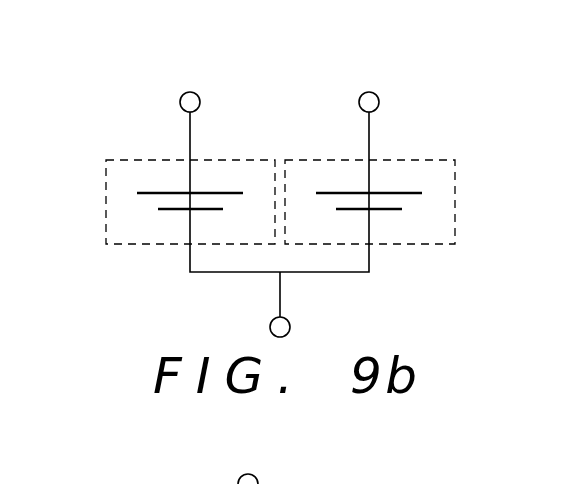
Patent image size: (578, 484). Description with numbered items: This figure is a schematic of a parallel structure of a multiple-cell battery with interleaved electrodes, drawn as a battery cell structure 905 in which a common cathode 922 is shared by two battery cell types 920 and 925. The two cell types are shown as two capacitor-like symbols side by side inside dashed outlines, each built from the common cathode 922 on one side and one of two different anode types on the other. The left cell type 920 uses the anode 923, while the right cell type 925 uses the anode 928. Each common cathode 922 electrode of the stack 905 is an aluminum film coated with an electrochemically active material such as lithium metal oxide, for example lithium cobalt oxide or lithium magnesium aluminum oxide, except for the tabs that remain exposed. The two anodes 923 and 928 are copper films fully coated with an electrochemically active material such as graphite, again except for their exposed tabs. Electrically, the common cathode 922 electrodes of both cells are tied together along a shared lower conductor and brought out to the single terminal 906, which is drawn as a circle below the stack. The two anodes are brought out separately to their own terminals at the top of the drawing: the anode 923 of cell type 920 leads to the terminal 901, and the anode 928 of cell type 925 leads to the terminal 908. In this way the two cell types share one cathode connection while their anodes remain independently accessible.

The battery cell structure 905 is at (424, 48).
The battery cell type 920 is at (120, 160).
The battery cell type 925 is at (439, 162).
The first terminal 901 is at (180, 103).
The terminal 908 is at (379, 103).
The terminal 906 is at (270, 327).
The anode 923 is at (142, 193).
The anode 928 is at (417, 193).
The common cathode 922 is at (162, 210).